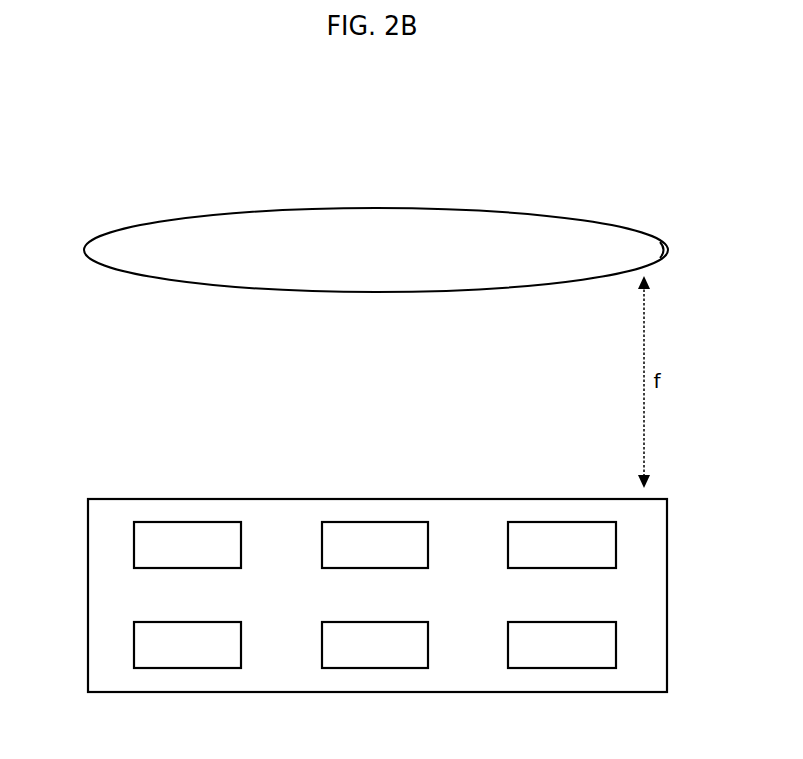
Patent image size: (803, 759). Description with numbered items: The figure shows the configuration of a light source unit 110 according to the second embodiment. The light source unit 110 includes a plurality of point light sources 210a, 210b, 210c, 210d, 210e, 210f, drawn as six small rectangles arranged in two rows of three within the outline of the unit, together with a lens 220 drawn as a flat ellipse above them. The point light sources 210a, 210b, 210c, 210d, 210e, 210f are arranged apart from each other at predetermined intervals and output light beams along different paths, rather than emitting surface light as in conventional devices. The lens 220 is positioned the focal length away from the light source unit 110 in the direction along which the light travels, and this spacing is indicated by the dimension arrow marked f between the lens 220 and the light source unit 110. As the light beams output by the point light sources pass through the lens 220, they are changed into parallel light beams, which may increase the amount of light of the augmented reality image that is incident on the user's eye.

The light source unit 110 is at (376, 192).
The lens 220 is at (686, 248).
The point light source 210a is at (137, 545).
The point light source 210b is at (375, 515).
The point light source 210c is at (562, 515).
The point light source 210d is at (137, 645).
The point light source 210e is at (375, 674).
The point light source 210f is at (562, 674).